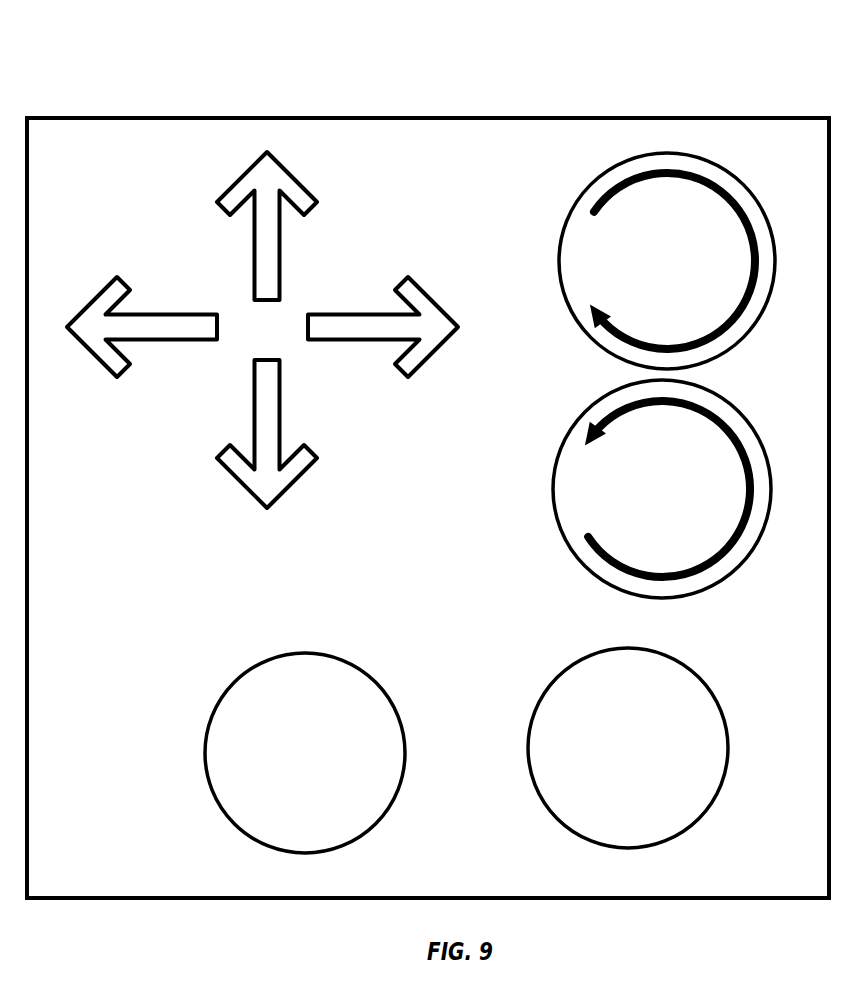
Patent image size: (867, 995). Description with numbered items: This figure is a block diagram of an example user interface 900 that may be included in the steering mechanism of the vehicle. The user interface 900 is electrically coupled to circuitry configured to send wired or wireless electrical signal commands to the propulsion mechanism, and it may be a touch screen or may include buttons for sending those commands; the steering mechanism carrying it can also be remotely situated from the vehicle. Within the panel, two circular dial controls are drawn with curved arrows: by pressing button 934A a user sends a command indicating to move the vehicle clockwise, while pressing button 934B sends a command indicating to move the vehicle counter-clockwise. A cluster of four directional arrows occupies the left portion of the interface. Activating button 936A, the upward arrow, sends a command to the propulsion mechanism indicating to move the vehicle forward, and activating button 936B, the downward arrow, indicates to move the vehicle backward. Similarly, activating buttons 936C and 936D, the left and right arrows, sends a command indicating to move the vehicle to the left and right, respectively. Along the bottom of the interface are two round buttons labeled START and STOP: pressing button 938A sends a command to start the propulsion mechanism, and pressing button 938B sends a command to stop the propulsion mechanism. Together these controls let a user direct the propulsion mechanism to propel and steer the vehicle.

The user interface 900 is at (172, 90).
The button 934A is at (607, 245).
The button 934B is at (598, 476).
The button 936A is at (273, 276).
The button 936B is at (273, 471).
The button 936C is at (196, 323).
The button 936D is at (395, 328).
The button 938A is at (237, 757).
The button 938B is at (558, 738).